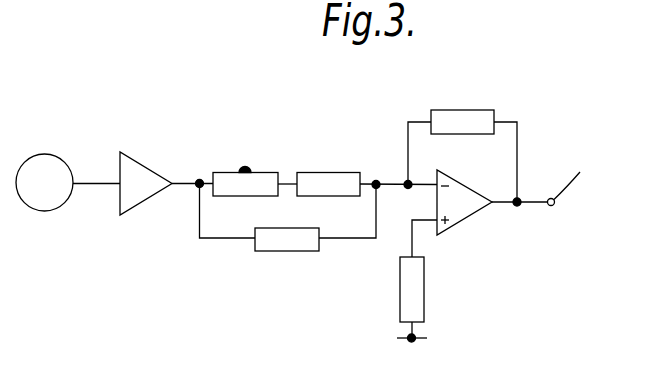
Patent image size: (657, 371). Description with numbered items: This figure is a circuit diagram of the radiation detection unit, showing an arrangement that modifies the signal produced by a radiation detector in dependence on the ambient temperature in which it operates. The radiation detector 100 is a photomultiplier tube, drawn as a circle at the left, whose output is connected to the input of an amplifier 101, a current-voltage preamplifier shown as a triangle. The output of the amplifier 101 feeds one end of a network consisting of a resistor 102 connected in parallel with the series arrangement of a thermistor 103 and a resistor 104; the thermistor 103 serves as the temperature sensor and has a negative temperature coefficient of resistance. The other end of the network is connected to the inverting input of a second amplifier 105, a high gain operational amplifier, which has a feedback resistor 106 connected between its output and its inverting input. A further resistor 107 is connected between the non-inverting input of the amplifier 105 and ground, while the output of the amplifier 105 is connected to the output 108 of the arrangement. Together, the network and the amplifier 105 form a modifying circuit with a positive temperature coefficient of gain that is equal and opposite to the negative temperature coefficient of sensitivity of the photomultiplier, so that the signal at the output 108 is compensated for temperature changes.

The radiation detector 100 is at (52, 153).
The amplifier 101 is at (150, 167).
The resistor 102 is at (268, 252).
The thermistor 103 is at (262, 172).
The resistor 104 is at (336, 172).
The amplifier 105 is at (480, 210).
The feedback resistor 106 is at (462, 110).
The resistor 107 is at (425, 318).
The output 108 is at (554, 181).